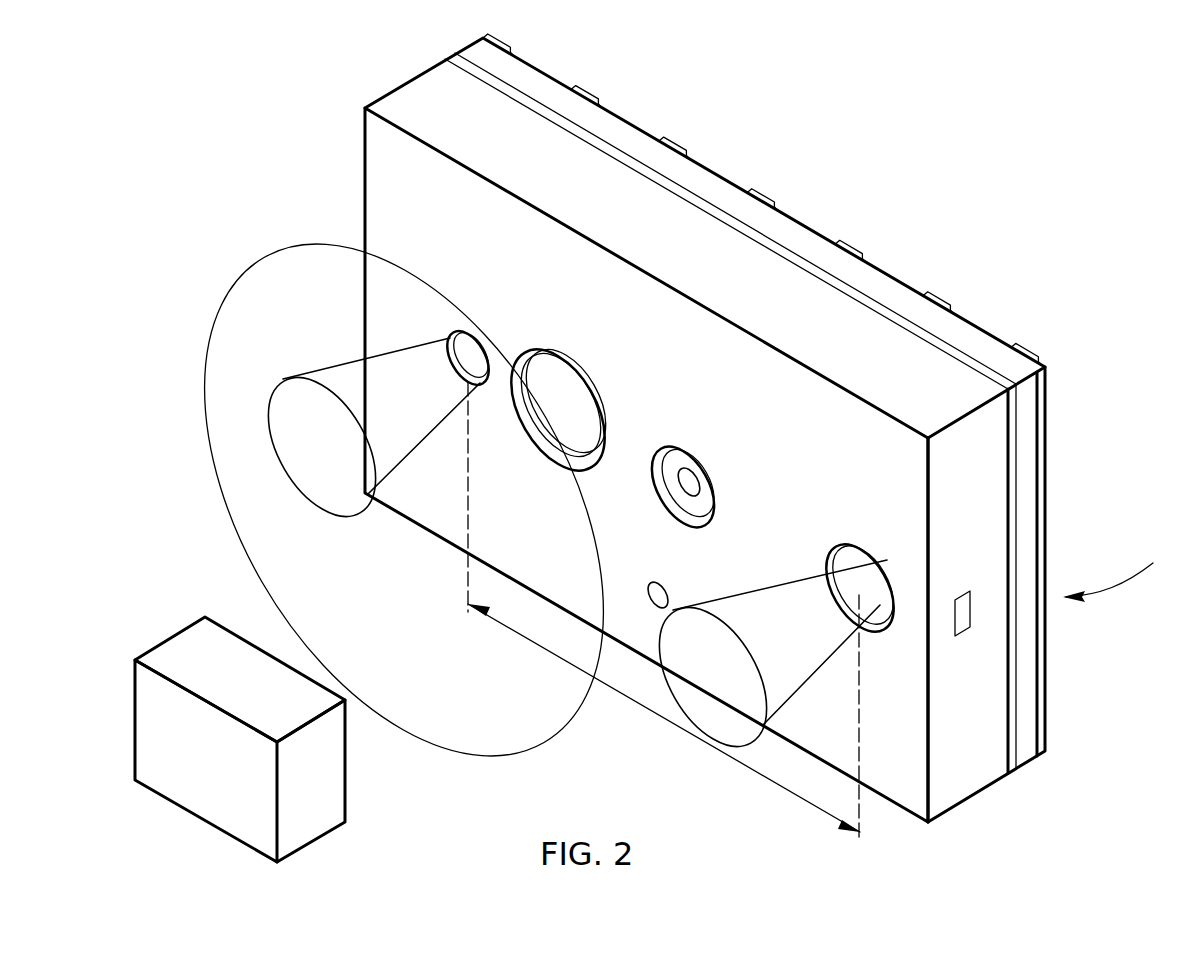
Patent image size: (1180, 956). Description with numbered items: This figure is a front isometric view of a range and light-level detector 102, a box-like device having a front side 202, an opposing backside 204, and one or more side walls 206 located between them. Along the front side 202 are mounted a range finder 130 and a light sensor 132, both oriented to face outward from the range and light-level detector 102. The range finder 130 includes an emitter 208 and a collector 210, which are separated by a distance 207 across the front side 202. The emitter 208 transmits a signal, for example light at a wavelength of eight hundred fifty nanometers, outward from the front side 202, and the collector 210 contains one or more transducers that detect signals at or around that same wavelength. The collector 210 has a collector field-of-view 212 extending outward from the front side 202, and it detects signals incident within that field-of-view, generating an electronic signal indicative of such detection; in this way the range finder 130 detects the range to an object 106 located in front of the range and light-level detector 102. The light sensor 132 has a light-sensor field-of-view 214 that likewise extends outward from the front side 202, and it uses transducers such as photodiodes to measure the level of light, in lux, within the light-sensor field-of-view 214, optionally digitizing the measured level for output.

The range and light-level detector 102 is at (852, 333).
The object 106 is at (195, 642).
The range finder 130 is at (452, 352).
The light sensor 132 is at (570, 403).
The front side 202 is at (875, 452).
The backside 204 is at (1121, 570).
The side walls 206 is at (975, 505).
The distance 207 is at (664, 611).
The emitter 208 is at (872, 605).
The collector 210 is at (445, 343).
The collector field-of-view 212 is at (290, 419).
The light-sensor field-of-view 214 is at (250, 528).